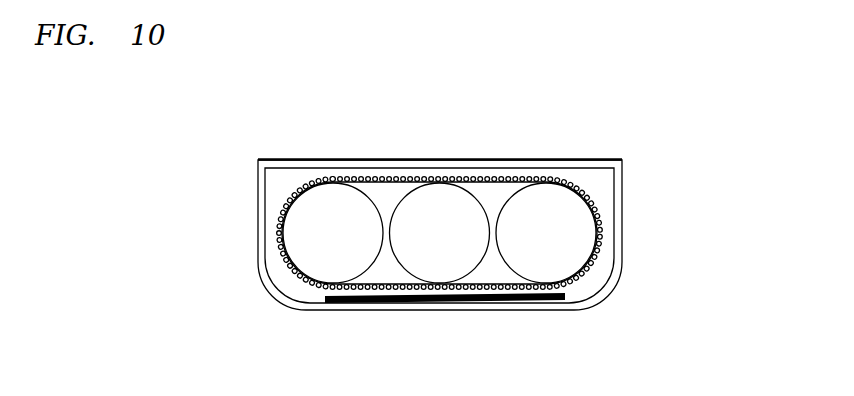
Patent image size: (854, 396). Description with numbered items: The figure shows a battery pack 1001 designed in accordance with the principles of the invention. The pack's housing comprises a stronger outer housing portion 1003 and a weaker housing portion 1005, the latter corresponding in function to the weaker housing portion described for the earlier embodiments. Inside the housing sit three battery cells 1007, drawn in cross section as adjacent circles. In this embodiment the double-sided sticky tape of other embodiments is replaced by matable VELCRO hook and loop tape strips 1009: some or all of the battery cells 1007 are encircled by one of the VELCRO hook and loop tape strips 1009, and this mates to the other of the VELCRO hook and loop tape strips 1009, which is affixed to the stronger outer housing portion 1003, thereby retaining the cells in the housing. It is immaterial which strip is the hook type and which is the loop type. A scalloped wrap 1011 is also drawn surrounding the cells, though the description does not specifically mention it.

The battery pack 1001 is at (113, 184).
The stronger outer housing portion 1003 is at (623, 222).
The weaker housing portion 1005 is at (287, 157).
The battery cells 1007 is at (365, 200).
The VELCRO hook and loop tape strips 1009 is at (330, 300).
The cushioning sheet 1011 is at (278, 253).